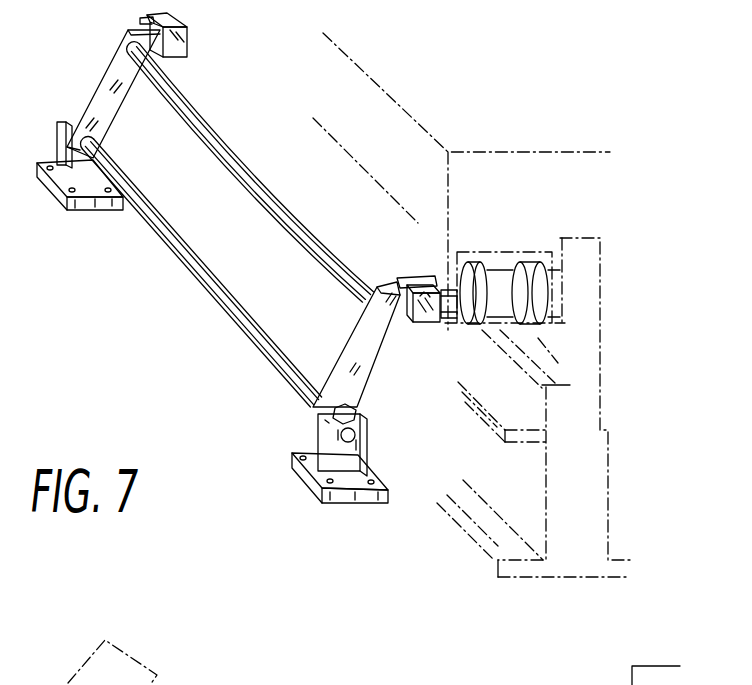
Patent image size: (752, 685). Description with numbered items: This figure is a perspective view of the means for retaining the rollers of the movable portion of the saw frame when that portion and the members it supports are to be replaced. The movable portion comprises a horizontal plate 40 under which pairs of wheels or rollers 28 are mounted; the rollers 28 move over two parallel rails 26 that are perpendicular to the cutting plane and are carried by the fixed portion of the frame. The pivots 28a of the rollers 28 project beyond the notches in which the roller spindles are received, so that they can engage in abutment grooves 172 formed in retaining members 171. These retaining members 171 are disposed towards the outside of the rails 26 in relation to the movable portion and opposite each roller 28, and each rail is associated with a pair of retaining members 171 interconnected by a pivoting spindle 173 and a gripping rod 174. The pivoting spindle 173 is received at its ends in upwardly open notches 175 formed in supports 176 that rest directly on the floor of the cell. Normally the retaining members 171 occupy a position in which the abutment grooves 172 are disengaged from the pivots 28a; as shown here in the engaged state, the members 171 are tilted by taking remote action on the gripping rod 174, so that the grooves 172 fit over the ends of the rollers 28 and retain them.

The retaining member 171 is at (118, 72).
The abutment groove 172 is at (167, 20).
The pivoting spindle 173 is at (192, 274).
The gripping rod 174 is at (245, 172).
The upwardly open notch 175 is at (336, 398).
The support 176 is at (57, 167).
The roller 28 is at (513, 293).
The pivot of the roller 28a is at (417, 323).
The horizontal plate 40 is at (563, 152).
The rail 26 is at (585, 393).